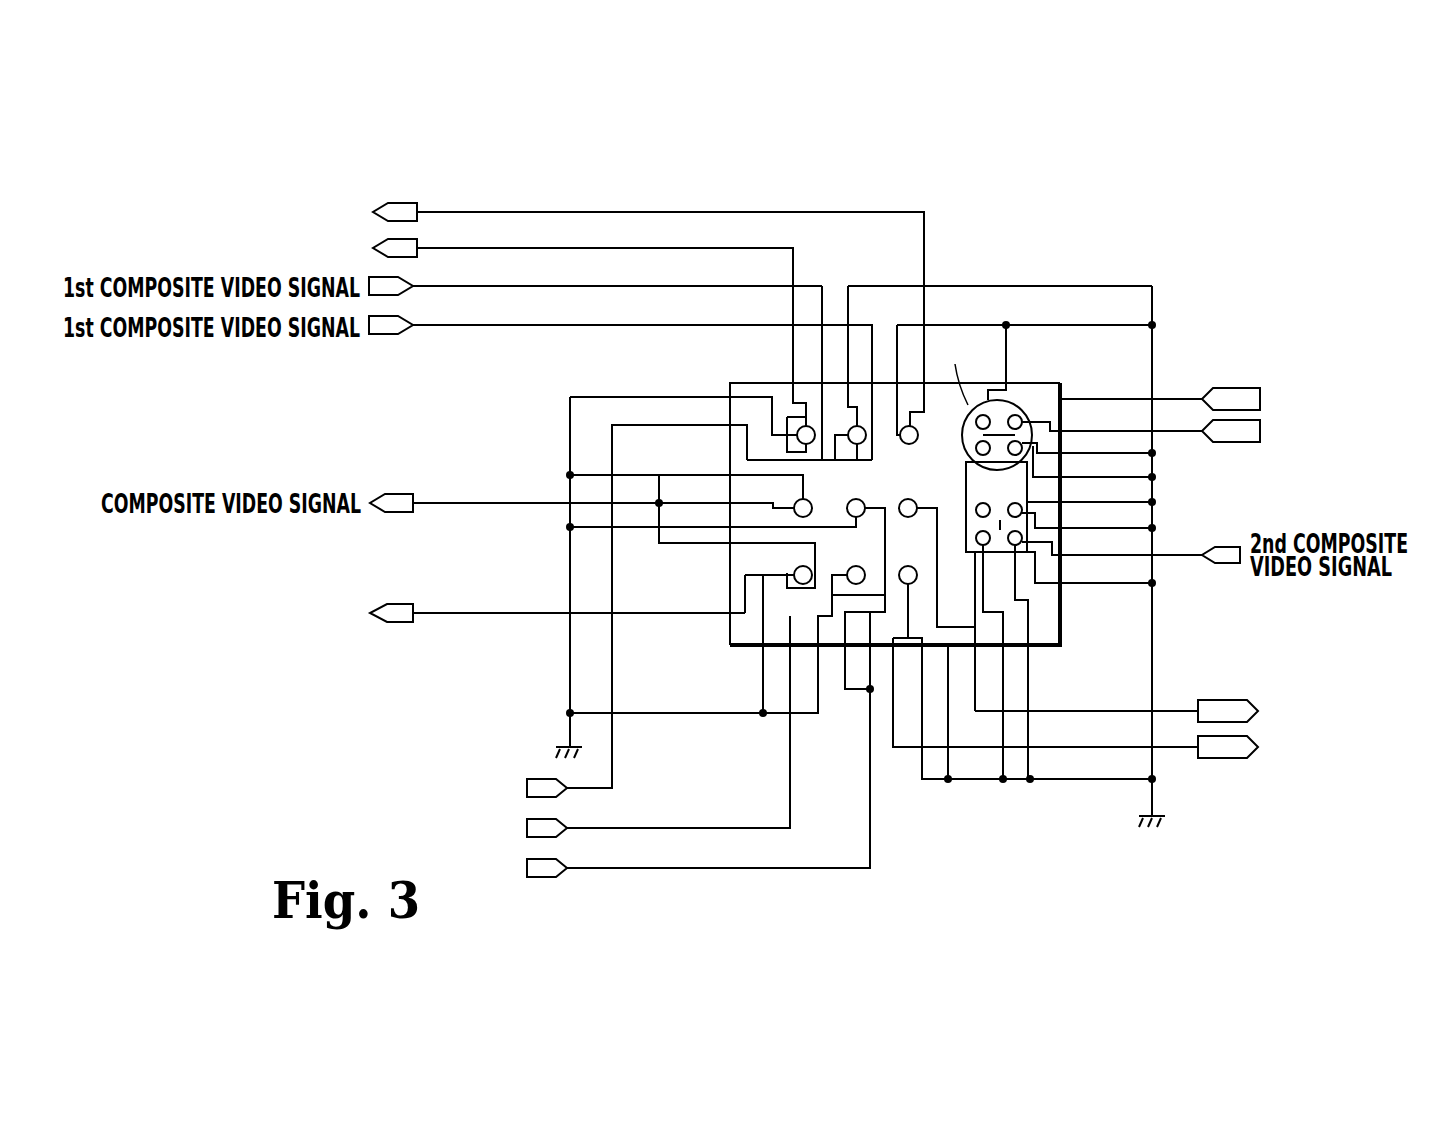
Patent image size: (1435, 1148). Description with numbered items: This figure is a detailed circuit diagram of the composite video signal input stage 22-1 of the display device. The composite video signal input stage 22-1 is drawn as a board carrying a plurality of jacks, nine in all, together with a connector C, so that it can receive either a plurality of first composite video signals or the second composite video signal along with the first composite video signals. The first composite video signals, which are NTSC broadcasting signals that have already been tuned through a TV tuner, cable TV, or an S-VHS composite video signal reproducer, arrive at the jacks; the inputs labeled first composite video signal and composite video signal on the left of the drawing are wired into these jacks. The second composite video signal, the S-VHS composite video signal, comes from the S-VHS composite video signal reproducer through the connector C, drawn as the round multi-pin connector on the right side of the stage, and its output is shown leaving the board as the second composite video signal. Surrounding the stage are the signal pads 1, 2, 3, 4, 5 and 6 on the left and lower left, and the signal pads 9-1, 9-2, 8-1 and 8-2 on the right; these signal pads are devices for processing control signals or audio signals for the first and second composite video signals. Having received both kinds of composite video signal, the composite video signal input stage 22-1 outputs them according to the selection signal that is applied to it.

The composite video signal input stage 22-1 is at (1094, 196).
The signal pad 1 is at (648, 314).
The signal pad 2 is at (589, 332).
The signal pad 3 is at (557, 613).
The signal pad 4 is at (642, 561).
The signal pad 5 is at (658, 727).
The signal pad 6 is at (698, 745).
The signal pad 9-1 is at (1160, 399).
The signal pad 9-2 is at (1141, 431).
The signal pad 8-1 is at (1075, 701).
The signal pad 8-2 is at (1116, 711).